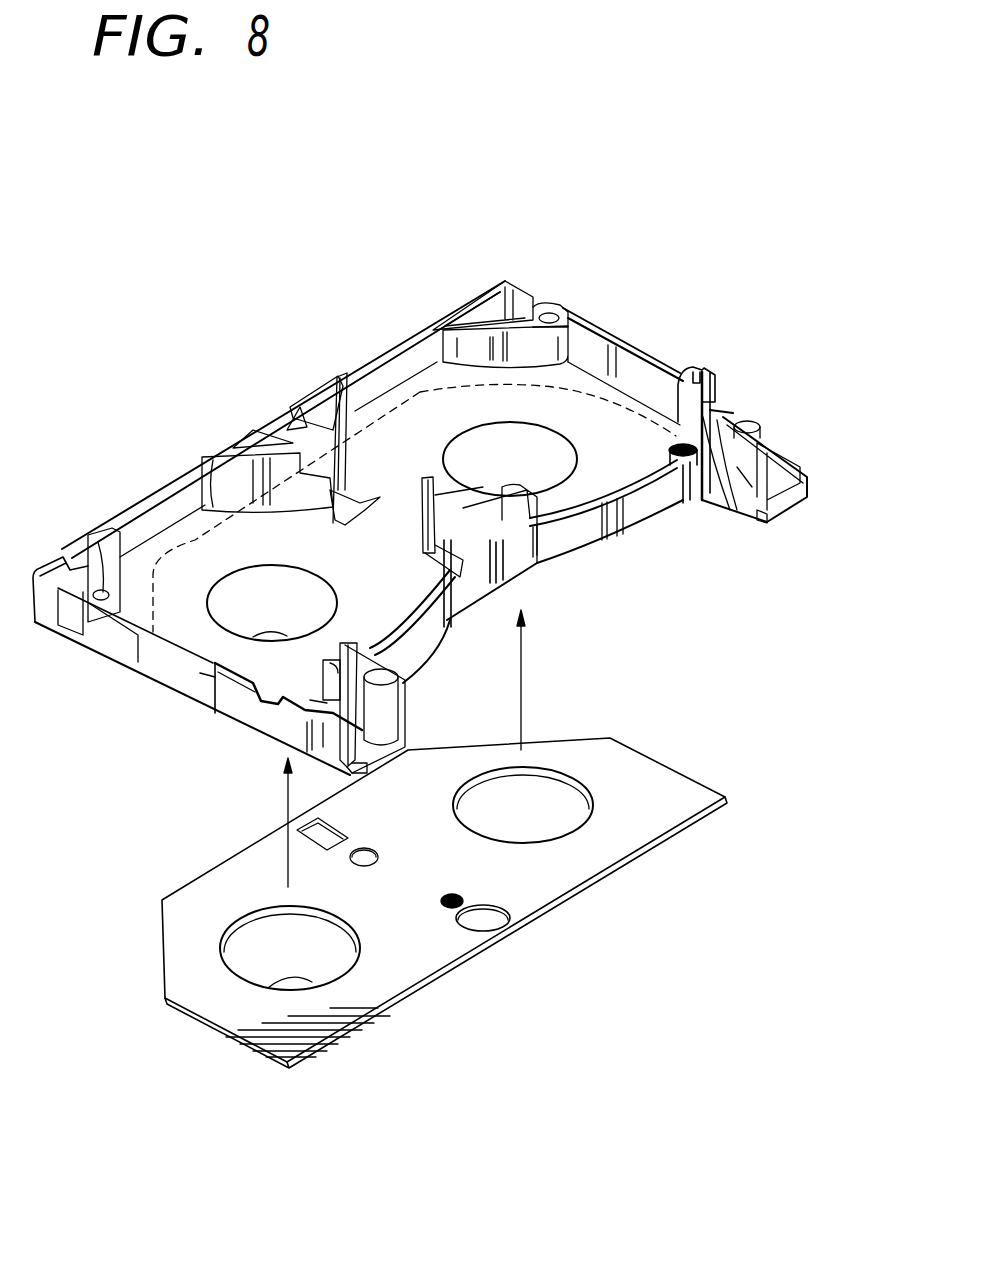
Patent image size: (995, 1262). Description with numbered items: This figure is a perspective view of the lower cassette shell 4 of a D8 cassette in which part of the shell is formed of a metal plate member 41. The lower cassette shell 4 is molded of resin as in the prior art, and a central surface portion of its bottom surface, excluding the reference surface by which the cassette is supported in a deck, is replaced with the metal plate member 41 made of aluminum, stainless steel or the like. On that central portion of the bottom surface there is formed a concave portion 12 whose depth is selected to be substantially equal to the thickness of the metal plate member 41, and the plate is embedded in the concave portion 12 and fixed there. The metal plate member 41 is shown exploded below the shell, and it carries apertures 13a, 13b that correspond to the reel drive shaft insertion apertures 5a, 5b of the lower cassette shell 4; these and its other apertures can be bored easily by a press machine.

The lower cassette shell 4 is at (373, 365).
The reel drive shaft insertion aperture 5a is at (253, 635).
The reel drive shaft insertion aperture 5b is at (548, 482).
The concave portion 12 is at (182, 543).
The aperture 13a is at (287, 977).
The aperture 13b is at (593, 800).
The metal plate member 41 is at (490, 950).